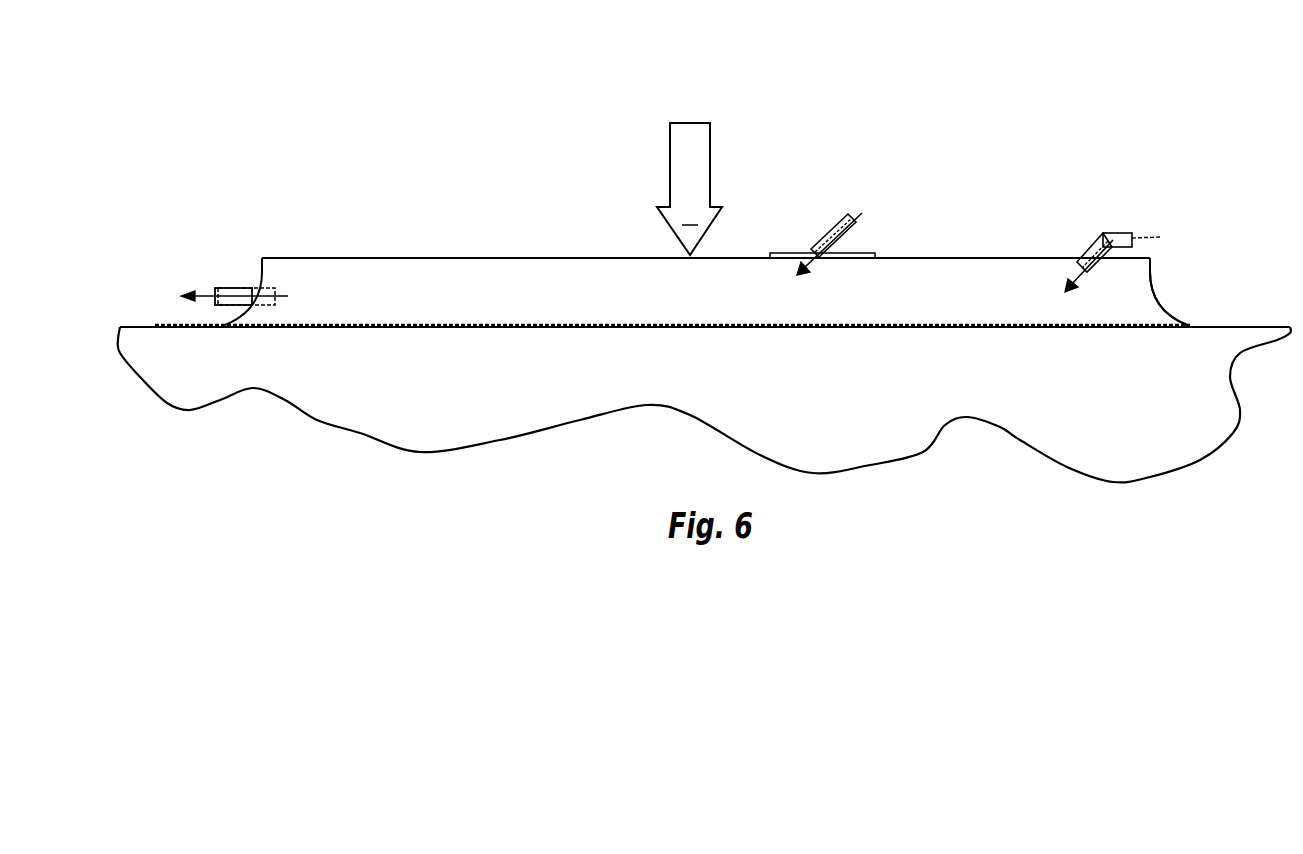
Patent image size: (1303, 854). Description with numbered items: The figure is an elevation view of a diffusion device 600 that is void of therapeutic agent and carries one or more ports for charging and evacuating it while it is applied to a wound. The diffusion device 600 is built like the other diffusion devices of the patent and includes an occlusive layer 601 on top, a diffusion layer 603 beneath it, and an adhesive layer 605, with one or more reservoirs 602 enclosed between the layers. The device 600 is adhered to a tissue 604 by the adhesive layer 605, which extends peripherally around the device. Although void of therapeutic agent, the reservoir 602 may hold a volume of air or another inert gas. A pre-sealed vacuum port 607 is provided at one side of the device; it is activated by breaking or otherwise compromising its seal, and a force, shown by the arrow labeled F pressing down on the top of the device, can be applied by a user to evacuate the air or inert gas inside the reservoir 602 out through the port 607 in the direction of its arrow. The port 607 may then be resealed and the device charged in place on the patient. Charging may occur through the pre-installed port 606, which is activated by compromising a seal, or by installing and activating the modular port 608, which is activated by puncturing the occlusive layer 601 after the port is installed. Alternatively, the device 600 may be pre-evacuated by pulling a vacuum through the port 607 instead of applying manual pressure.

The diffusion device 600 is at (614, 130).
The occlusive layer 601 is at (375, 258).
The reservoir 602 is at (561, 283).
The diffusion layer 603 is at (845, 323).
The tissue 604 is at (490, 359).
The adhesive layer 605 is at (180, 328).
The pre-installed port 606 is at (1118, 232).
The pre-sealed vacuum port 607 is at (222, 288).
The modular port 608 is at (827, 235).